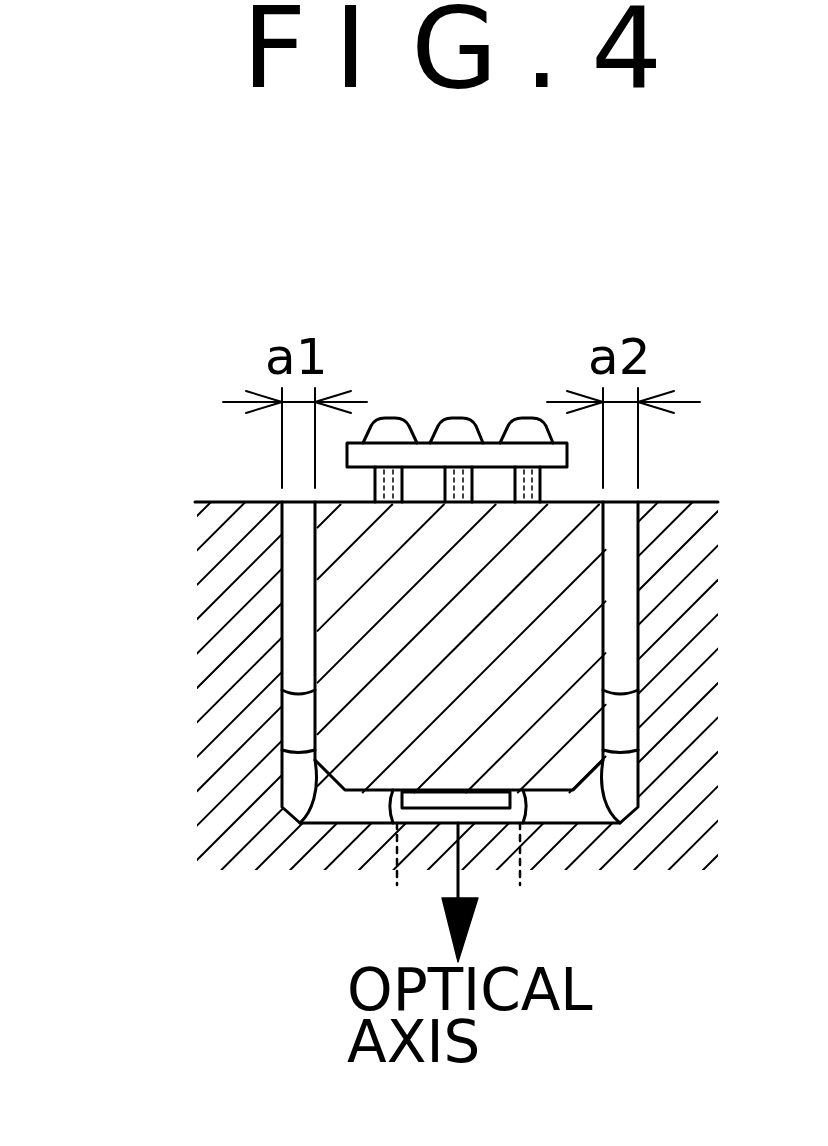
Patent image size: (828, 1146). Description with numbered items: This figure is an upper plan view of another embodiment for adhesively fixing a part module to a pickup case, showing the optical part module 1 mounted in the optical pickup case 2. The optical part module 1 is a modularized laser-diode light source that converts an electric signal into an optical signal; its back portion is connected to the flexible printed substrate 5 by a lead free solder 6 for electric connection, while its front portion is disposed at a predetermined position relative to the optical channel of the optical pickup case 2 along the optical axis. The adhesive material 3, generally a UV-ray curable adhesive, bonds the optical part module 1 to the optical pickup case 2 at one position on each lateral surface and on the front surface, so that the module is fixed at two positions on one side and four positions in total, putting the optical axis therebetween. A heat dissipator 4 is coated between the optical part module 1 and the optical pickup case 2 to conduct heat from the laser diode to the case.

The optical part module 1 is at (358, 615).
The optical pickup case 2 is at (240, 835).
The adhesive material 3 is at (300, 723).
The heat dissipator 4 is at (623, 613).
The flexible printed substrate 5 is at (483, 457).
The lead free solder 6 is at (450, 427).